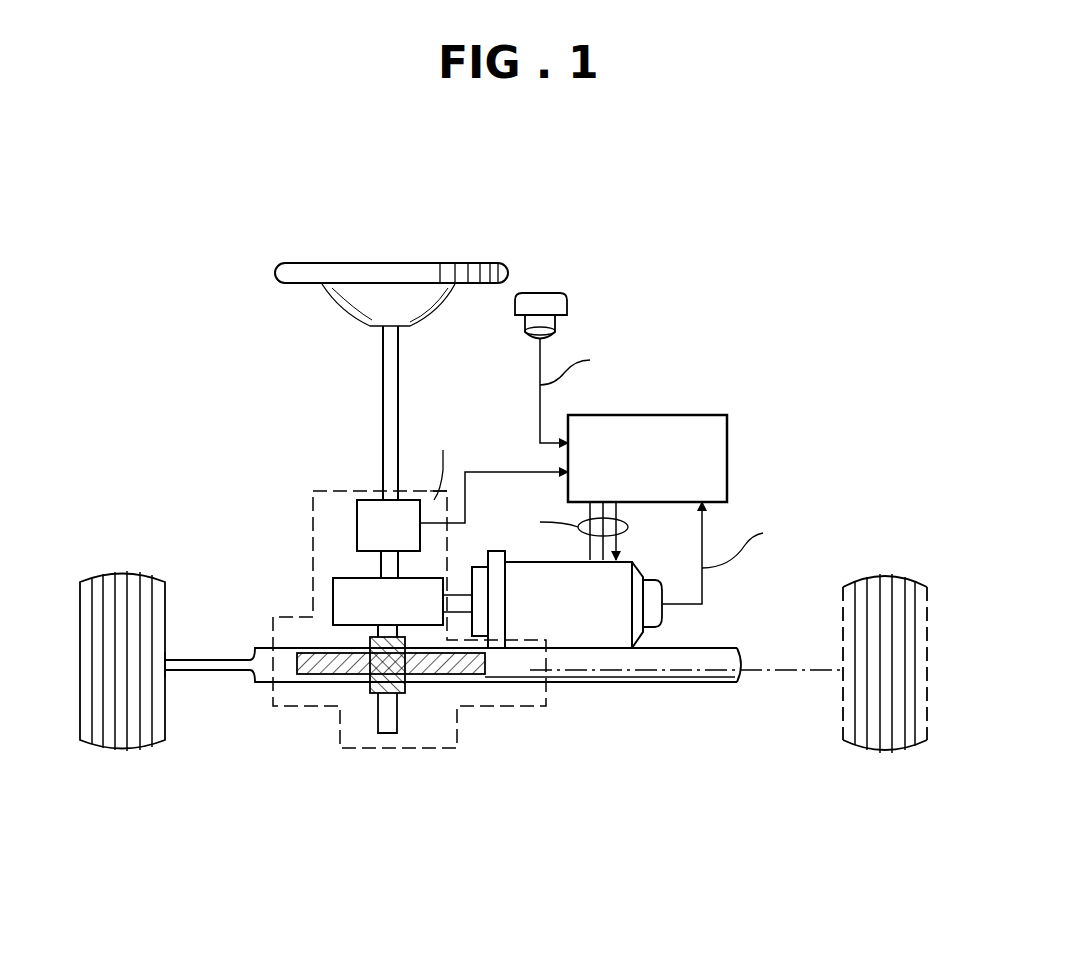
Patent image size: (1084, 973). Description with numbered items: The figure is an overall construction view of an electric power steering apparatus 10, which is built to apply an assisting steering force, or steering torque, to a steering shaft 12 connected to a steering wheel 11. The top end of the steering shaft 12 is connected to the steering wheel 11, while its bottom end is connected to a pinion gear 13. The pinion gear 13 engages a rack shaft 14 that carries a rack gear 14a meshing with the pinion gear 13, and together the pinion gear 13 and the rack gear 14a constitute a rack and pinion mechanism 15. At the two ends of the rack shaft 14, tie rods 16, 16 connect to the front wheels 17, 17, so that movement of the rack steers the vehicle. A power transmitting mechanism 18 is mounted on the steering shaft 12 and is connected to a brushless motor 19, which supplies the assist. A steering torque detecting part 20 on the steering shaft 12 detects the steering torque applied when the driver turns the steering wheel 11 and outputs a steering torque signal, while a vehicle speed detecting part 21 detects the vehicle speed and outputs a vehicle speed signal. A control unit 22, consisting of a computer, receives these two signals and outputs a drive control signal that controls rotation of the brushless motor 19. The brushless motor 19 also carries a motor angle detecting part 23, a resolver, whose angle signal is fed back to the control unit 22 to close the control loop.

The electric power steering apparatus 10 is at (296, 222).
The steering wheel 11 is at (392, 262).
The steering shaft 12 is at (382, 398).
The pinion gear 13 is at (397, 693).
The rack shaft 14 is at (492, 708).
The rack gear 14a is at (312, 674).
The rack and pinion mechanism 15 is at (366, 708).
The tie rod 16 is at (205, 673).
The front wheel 17 is at (113, 580).
The power transmitting mechanism 18 is at (333, 602).
The brushless motor 19 is at (575, 627).
The steering torque detecting part 20 is at (357, 527).
The vehicle speed detecting part 21 is at (565, 290).
The control unit 22 is at (648, 415).
The motor angle detecting part 23 is at (650, 615).